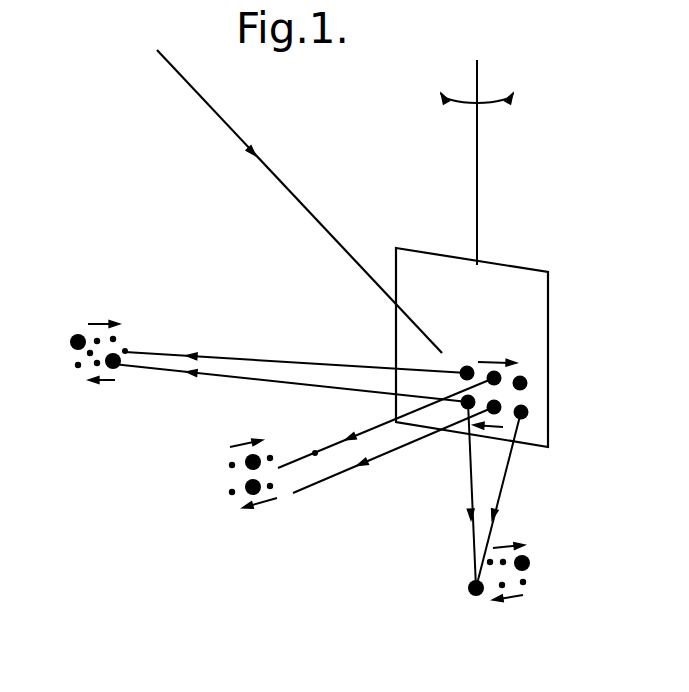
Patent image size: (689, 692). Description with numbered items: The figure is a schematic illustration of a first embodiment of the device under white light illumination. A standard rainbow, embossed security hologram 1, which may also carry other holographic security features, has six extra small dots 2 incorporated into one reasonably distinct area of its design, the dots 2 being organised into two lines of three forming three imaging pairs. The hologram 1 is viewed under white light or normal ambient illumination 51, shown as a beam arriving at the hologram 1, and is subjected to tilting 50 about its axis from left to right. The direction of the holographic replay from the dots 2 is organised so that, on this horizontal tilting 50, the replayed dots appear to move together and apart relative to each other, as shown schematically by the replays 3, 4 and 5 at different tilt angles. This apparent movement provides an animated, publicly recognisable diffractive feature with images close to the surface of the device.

The security hologram 1 is at (421, 251).
The dots 2 is at (526, 431).
The first tilt-angle replay 3 is at (56, 362).
The second tilt-angle replay 4 is at (536, 374).
The third tilt-angle replay 5 is at (466, 613).
The tilting 50 is at (460, 107).
The white light illumination 51 is at (230, 125).